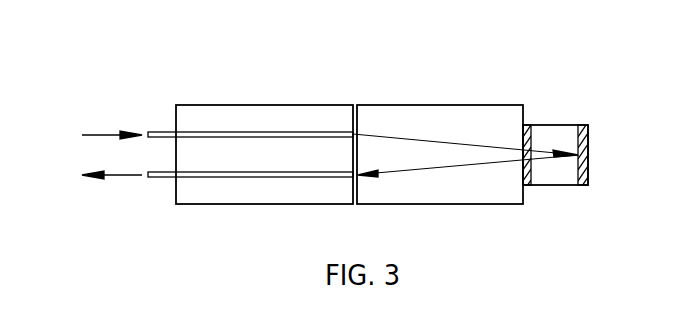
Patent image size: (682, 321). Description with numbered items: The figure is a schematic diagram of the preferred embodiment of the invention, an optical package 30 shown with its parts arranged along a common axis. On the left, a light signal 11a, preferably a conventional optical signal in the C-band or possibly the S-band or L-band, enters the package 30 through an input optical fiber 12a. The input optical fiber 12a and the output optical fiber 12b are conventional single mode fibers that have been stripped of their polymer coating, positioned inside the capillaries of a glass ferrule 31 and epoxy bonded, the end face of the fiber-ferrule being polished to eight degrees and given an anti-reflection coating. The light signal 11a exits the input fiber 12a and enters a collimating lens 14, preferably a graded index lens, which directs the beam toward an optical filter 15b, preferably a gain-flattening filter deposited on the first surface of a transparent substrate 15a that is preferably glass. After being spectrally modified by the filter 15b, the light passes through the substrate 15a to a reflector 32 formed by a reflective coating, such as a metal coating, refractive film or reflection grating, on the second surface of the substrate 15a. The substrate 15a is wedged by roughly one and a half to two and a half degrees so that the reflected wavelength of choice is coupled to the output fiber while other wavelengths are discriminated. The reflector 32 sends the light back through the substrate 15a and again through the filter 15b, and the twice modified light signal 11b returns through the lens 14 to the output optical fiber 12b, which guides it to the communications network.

The package 30 is at (363, 40).
The glass ferrule 31 is at (271, 103).
The collimating lens 14 is at (440, 103).
The transparent substrate 15a is at (560, 122).
The optical filter 15b is at (529, 188).
The reflector 32 is at (583, 187).
The light signal 11a is at (100, 132).
The twice modified light signal 11b is at (122, 178).
The input optical fiber 12a is at (162, 125).
The output optical fiber 12b is at (162, 182).